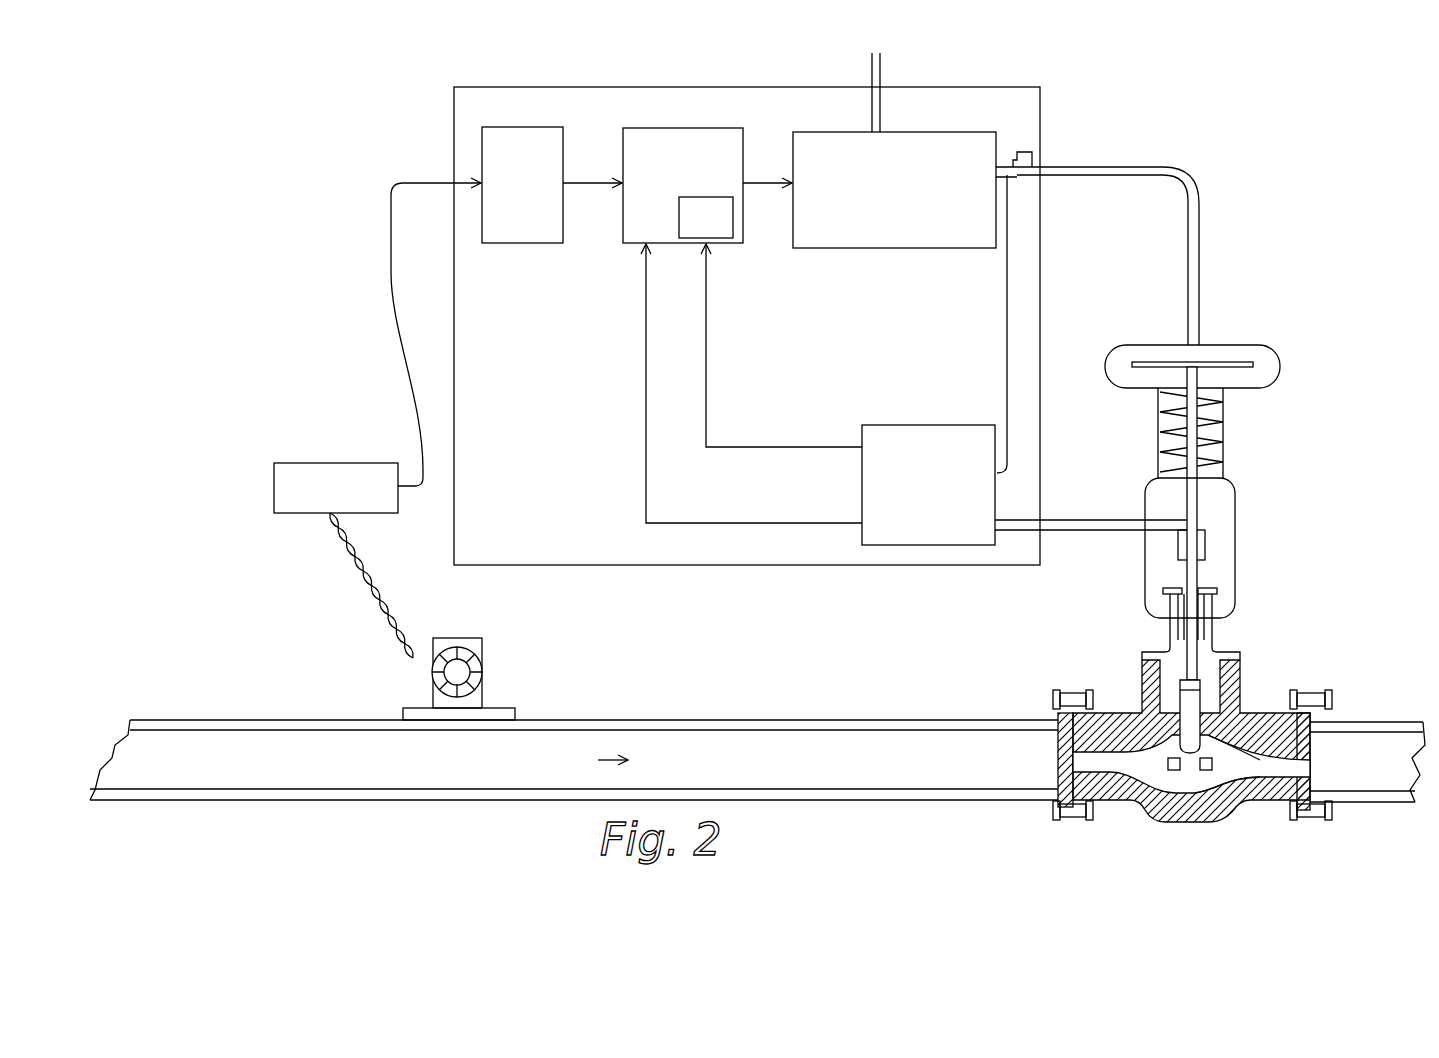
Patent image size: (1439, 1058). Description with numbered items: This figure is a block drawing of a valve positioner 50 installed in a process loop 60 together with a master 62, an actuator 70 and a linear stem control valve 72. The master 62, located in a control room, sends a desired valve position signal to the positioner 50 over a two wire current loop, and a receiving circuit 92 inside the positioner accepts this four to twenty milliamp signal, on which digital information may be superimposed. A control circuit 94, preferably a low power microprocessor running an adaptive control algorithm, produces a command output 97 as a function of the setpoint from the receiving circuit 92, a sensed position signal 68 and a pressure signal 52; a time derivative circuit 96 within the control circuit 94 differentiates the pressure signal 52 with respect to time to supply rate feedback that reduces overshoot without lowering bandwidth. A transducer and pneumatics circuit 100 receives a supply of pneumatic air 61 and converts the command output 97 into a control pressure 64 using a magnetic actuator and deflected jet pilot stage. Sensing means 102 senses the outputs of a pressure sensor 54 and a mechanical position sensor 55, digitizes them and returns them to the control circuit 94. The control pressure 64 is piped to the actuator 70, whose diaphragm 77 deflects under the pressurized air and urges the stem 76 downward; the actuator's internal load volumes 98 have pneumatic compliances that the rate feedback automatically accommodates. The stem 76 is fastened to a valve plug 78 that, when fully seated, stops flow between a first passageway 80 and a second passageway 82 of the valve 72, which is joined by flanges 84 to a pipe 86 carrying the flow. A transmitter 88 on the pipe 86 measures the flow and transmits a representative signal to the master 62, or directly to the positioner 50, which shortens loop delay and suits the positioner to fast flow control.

The valve positioner 50 is at (532, 490).
The pressure feedback signal 52 is at (706, 300).
The pressure sensor 54 is at (1030, 152).
The mechanical position sensor 55 is at (1062, 520).
The process loop 60 is at (382, 152).
The supply of pneumatic air 61 is at (872, 78).
The master 62 is at (334, 463).
The control pressure 64 is at (1135, 167).
The sensed position signal 68 is at (646, 333).
The actuator 70 is at (1232, 345).
The linear stem control valve 72 is at (1240, 705).
The stem 76 is at (1200, 492).
The diaphragm 77 is at (1262, 347).
The valve plug 78 is at (1212, 665).
The first passageway 80 is at (1122, 770).
The second passageway 82 is at (1262, 770).
The flanges 84 is at (1068, 690).
The pipe 86 is at (848, 720).
The transmitter 88 is at (483, 697).
The receiving circuit 92 is at (540, 240).
The control circuit 94 is at (634, 233).
The time derivative circuit 96 is at (733, 222).
The command output 97 is at (770, 182).
The internal load volumes 98 is at (1208, 365).
The transducer and pneumatics circuit 100 is at (855, 245).
The sensing means 102 is at (906, 532).